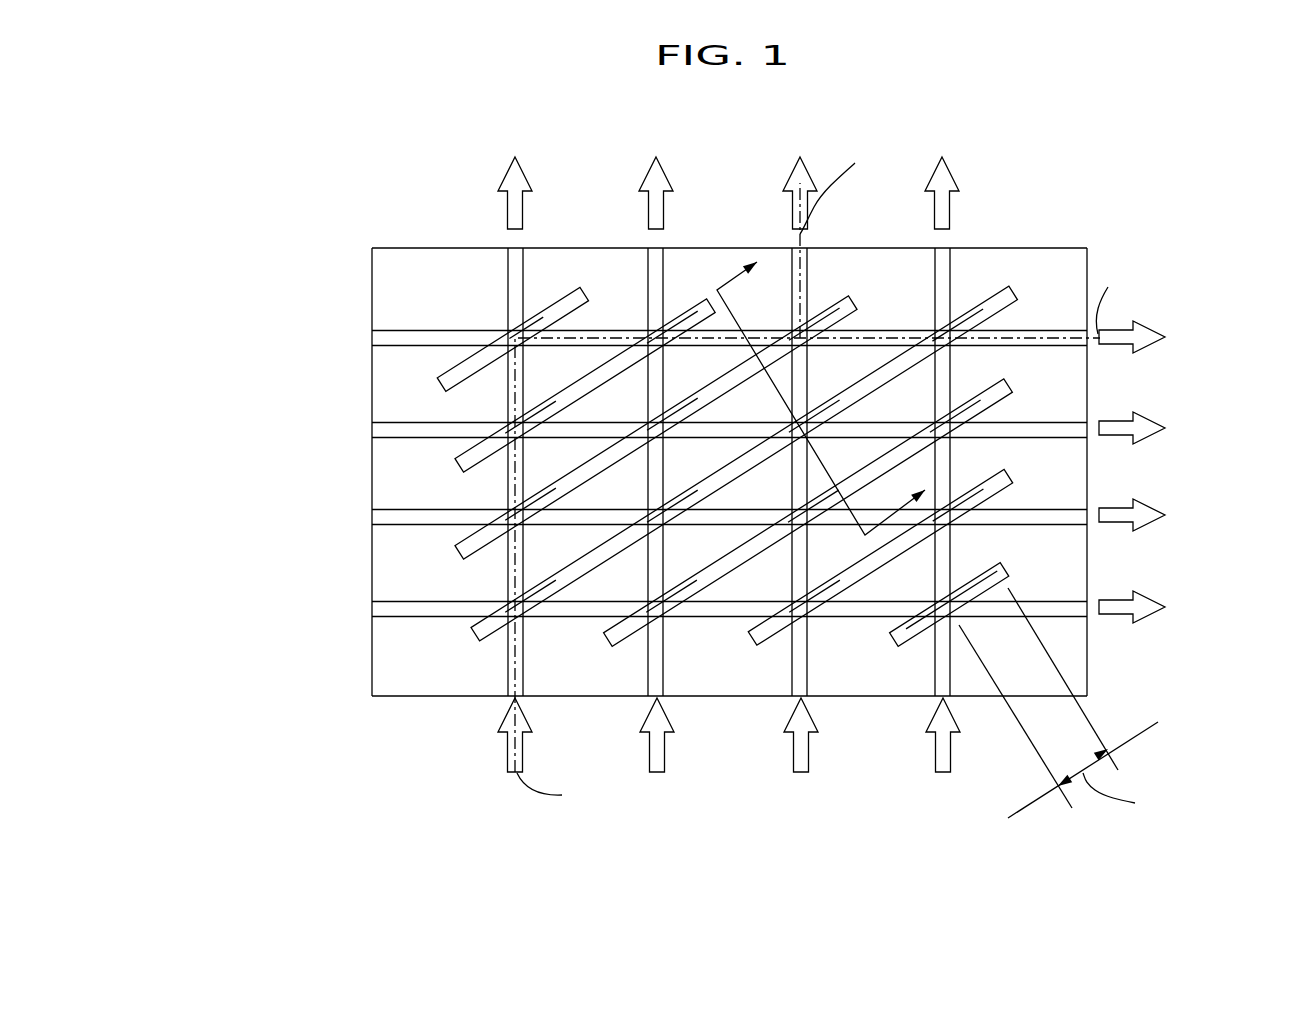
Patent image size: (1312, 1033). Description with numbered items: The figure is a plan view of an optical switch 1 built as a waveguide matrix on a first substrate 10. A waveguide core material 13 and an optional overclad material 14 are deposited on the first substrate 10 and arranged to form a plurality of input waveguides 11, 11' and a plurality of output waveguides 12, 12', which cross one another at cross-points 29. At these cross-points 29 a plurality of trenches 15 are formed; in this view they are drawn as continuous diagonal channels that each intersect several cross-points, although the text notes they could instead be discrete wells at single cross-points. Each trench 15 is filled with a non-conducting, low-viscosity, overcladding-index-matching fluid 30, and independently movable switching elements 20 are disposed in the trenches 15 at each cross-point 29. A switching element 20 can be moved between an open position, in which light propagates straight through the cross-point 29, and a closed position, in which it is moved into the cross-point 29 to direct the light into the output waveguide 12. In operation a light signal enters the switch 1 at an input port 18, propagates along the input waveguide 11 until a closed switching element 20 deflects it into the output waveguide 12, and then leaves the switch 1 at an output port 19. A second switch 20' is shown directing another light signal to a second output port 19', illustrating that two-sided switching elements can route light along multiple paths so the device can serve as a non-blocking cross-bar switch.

The optical switch 1 is at (1235, 208).
The first substrate 10 is at (1005, 248).
The input waveguide 11 is at (425, 525).
The input waveguide 11' is at (839, 407).
The output waveguide 12 is at (790, 247).
The output waveguide 12' is at (833, 534).
The waveguide core material 13 is at (398, 602).
The optional overclad material 14 is at (390, 643).
The trench 15 is at (564, 294).
The input port 18 is at (507, 747).
The output port 19 is at (1180, 305).
The output port 19' is at (770, 163).
The switching element 20 is at (440, 237).
The switch 20' is at (689, 374).
The cross-point 29 is at (812, 625).
The overcladding-index-matching fluid 30 is at (441, 384).